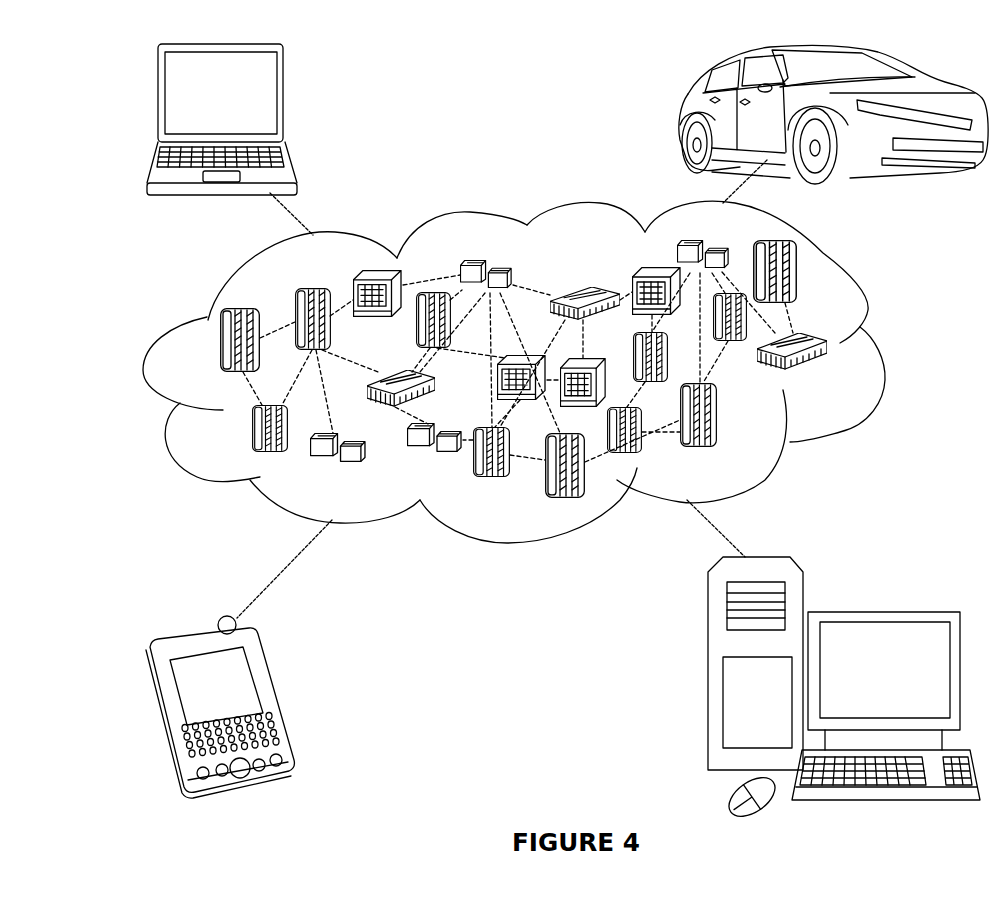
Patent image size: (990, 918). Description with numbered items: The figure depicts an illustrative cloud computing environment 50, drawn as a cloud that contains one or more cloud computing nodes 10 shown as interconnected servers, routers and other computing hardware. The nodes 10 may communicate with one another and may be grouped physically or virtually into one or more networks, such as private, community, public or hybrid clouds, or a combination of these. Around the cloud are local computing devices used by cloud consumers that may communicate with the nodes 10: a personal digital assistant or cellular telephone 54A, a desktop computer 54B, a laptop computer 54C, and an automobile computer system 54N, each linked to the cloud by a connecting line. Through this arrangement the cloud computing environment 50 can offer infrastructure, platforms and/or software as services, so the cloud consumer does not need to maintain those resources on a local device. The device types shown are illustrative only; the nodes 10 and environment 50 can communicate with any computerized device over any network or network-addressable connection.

The cloud computing nodes 10 is at (827, 371).
The cloud computing environment 50 is at (887, 347).
The personal digital assistant (PDA) or cellular telephone 54A is at (273, 700).
The desktop computer 54B is at (882, 608).
The laptop computer 54C is at (287, 102).
The automobile computer system 54N is at (680, 112).